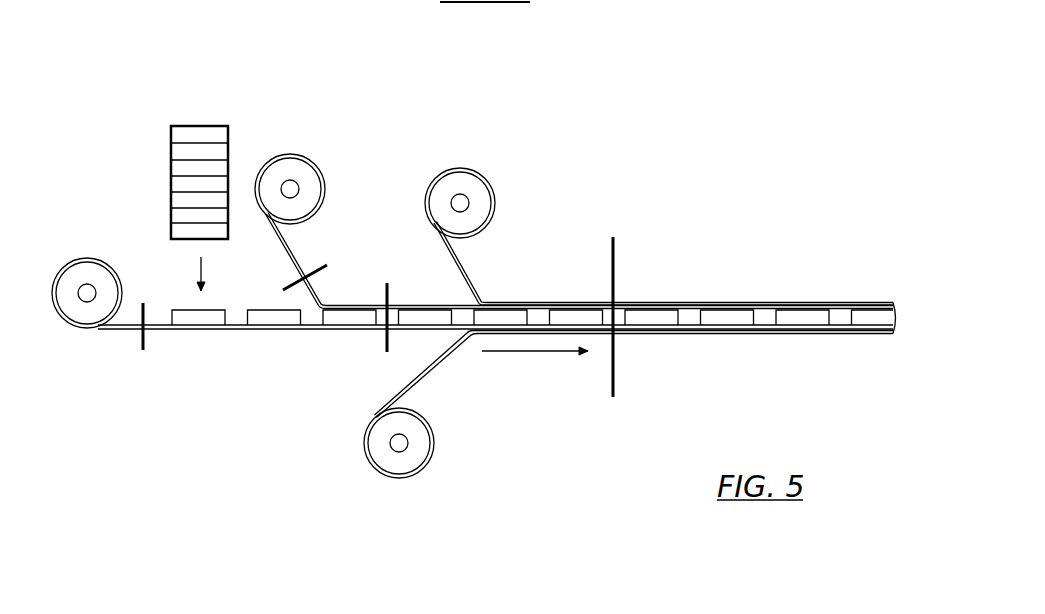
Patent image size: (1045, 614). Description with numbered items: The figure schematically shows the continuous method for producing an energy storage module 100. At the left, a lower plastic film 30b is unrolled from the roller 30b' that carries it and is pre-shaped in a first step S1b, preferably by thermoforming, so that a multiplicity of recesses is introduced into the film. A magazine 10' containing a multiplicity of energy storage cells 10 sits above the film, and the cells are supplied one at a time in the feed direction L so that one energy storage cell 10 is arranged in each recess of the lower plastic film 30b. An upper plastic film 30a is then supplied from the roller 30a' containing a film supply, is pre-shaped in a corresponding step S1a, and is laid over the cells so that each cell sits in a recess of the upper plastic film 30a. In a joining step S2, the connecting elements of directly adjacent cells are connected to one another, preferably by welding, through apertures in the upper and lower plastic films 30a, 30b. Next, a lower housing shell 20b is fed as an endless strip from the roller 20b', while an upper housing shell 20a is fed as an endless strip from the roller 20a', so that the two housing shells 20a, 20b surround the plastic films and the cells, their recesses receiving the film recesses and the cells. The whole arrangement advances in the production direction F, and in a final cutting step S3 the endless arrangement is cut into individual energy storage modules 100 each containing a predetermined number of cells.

The energy storage cell 10 is at (532, 402).
The magazine 10' is at (215, 125).
The upper plastic film 30a is at (576, 318).
The roller 30a' is at (311, 137).
The lower plastic film 30b is at (493, 414).
The roller 30b' is at (100, 237).
The upper housing shell 20a is at (663, 222).
The roller 20a' is at (498, 156).
The lower housing shell 20b is at (634, 423).
The roller 20b' is at (347, 477).
The energy storage module 100 is at (855, 270).
The pre-shaping step of the upper plastic film S1a is at (330, 260).
The pre-shaping step of the lower plastic film S1b is at (142, 357).
The joining step S2 is at (380, 335).
The cutting step S3 is at (627, 250).
The feed direction of the energy storage cells L is at (210, 274).
The production direction F is at (535, 364).